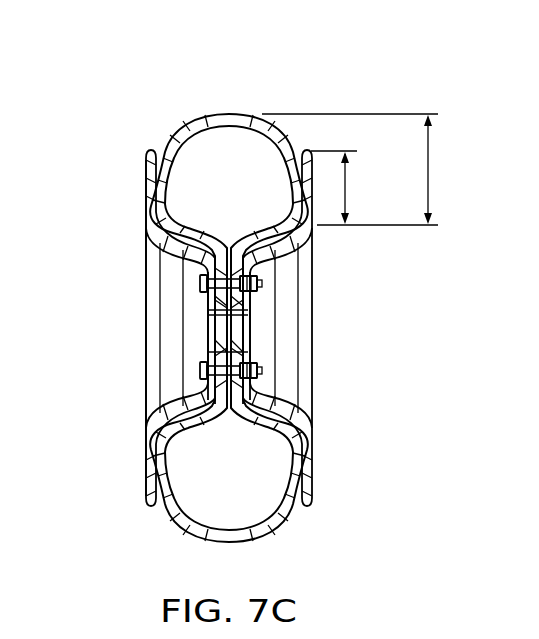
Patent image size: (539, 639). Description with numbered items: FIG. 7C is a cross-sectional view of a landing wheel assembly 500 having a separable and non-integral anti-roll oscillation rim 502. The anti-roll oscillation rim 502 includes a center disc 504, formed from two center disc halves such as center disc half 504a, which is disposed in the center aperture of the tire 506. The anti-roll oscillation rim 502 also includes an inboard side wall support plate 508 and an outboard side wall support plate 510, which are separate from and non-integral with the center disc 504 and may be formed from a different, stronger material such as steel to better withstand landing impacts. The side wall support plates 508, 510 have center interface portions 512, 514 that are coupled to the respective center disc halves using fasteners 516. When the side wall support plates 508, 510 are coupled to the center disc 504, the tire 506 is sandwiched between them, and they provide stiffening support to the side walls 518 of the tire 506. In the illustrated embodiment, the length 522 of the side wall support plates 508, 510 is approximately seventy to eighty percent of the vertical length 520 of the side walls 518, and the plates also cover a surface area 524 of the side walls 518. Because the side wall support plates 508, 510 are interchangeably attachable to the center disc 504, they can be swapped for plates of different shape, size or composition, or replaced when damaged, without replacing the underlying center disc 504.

The landing wheel assembly 500 is at (165, 79).
The anti-roll oscillation rim 502 is at (136, 448).
The center disc 504 is at (207, 400).
The center disc half 504a is at (252, 260).
The tire 506 is at (184, 537).
The inboard side wall support plate 508 is at (314, 322).
The outboard side wall support plate 510 is at (145, 251).
The center interface portion 512 is at (252, 400).
The center interface portion 514 is at (204, 276).
The fasteners 516 is at (205, 284).
The side walls 518 is at (161, 184).
The vertical length 520 is at (432, 152).
The length 522 is at (347, 188).
The surface area 524 is at (158, 487).